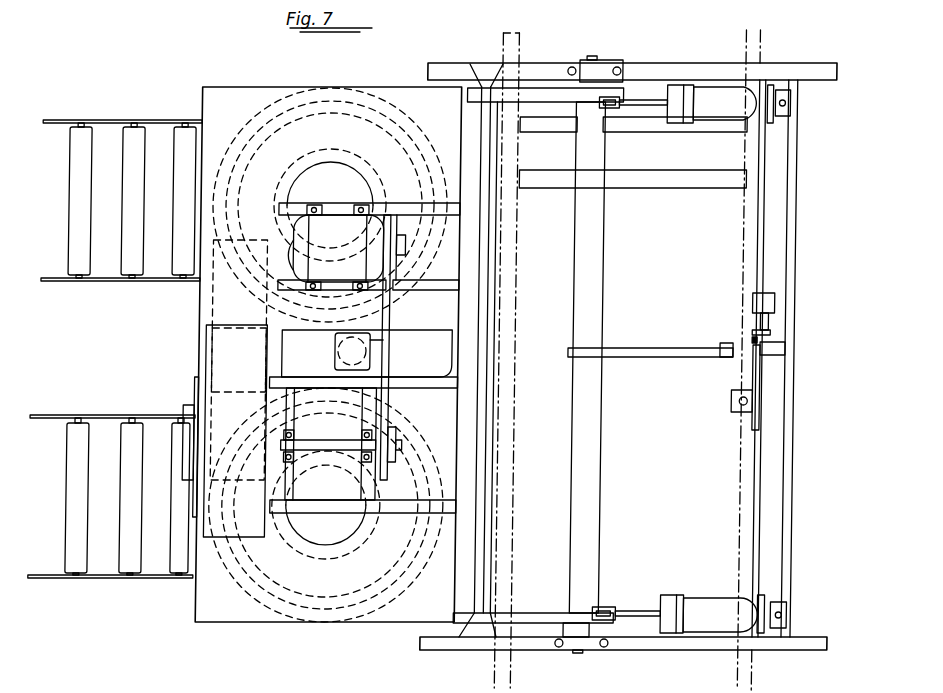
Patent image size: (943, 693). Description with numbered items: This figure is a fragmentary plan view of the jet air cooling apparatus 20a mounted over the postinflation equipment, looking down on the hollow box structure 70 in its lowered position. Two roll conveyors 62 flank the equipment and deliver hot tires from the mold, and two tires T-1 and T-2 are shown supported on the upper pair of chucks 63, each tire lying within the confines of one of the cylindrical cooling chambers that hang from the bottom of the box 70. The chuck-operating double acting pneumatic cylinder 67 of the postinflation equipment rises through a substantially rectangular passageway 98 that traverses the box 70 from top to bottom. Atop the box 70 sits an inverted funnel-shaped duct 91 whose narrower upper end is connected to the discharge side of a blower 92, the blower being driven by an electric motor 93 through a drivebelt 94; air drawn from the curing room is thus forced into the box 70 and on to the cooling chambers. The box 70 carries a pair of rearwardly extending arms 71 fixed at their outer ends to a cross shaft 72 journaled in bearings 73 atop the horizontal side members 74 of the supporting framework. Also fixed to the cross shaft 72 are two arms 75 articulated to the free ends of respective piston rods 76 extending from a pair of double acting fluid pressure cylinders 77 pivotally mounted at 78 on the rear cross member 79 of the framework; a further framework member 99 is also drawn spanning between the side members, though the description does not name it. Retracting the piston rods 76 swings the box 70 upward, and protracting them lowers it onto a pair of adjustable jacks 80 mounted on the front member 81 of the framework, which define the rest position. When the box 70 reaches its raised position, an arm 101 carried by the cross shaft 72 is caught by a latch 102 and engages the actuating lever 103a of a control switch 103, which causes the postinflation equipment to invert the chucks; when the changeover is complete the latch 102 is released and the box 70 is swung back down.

The jet air cooling apparatus 20a is at (204, 643).
The roll conveyors 62 is at (88, 140).
The chucks 63 is at (345, 176).
The double acting pneumatic cylinder 67 is at (372, 342).
The hollow box structure 70 is at (393, 617).
The rearwardly extending arms 71 is at (555, 102).
The cross shaft 72 is at (594, 420).
The bearings 73 is at (593, 70).
The horizontal side members 74 is at (774, 70).
The arms 75 is at (592, 106).
The piston rods 76 is at (657, 112).
The double acting fluid pressure cylinders 77 is at (707, 113).
The pivot mounting 78 is at (781, 101).
The rear cross member 79 is at (790, 397).
The adjustable jacks 80 is at (483, 106).
The front member 81 is at (488, 410).
The inverted funnel-shaped duct 91 is at (216, 300).
The blower 92 is at (220, 537).
The electric motor 93 is at (290, 257).
The drivebelt 94 is at (388, 366).
The rectangular passageway 98 is at (440, 378).
The cross member 99 is at (643, 186).
The arm 101 is at (653, 333).
The latch 102 is at (753, 360).
The control switch 103 is at (775, 304).
The actuating lever 103a is at (755, 336).
The tire T-1 is at (307, 117).
The tire T-2 is at (272, 580).